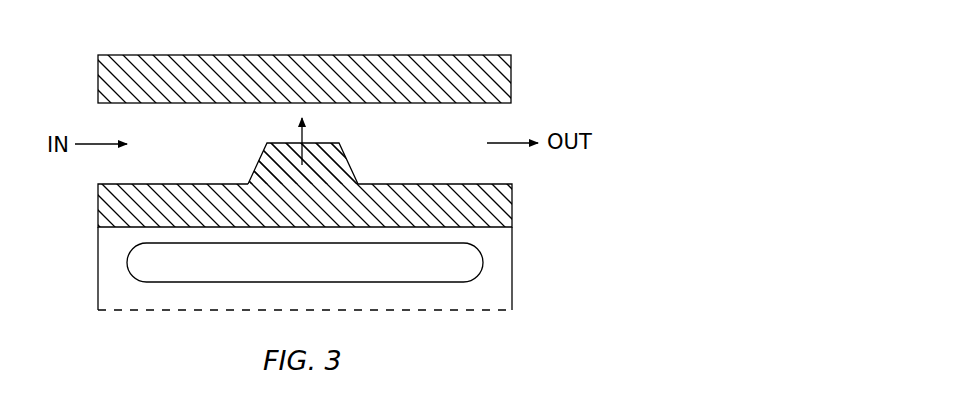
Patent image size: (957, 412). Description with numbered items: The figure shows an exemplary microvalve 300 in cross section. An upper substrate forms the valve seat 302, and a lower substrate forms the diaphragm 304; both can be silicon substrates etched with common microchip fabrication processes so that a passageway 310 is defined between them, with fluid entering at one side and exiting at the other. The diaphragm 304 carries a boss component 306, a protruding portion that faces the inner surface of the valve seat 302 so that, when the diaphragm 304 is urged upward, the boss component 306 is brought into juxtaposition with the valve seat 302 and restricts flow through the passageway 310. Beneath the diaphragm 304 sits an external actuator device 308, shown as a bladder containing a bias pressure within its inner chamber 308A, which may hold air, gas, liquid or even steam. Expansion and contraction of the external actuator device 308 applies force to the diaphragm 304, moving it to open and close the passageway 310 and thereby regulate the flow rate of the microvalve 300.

The microvalve 300 is at (620, 75).
The valve seat 302 is at (493, 83).
The diaphragm 304 is at (495, 203).
The boss component 306 is at (340, 163).
The external actuator device 308 is at (483, 263).
The inner chamber 308A is at (145, 264).
The passageway 310 is at (223, 154).